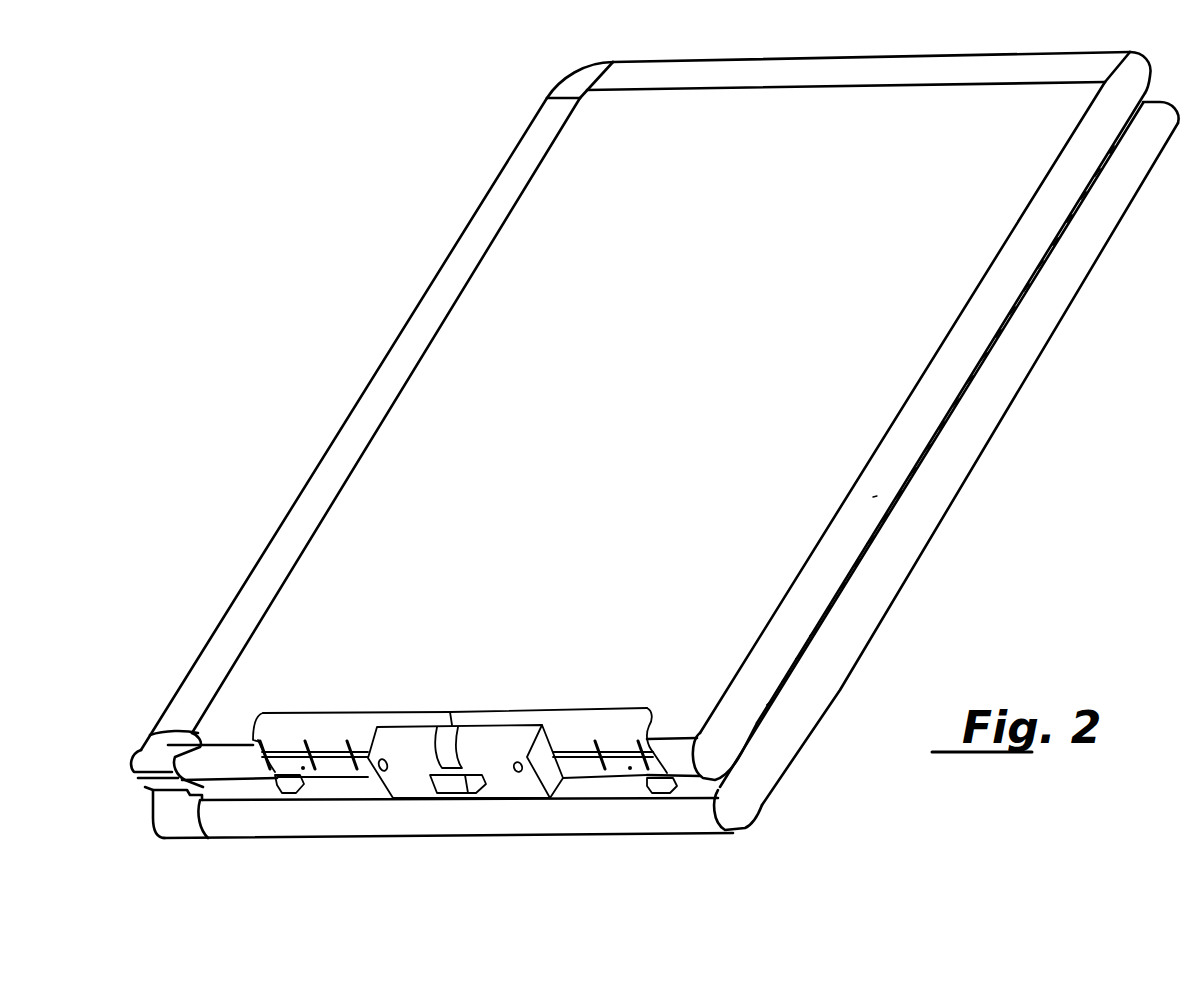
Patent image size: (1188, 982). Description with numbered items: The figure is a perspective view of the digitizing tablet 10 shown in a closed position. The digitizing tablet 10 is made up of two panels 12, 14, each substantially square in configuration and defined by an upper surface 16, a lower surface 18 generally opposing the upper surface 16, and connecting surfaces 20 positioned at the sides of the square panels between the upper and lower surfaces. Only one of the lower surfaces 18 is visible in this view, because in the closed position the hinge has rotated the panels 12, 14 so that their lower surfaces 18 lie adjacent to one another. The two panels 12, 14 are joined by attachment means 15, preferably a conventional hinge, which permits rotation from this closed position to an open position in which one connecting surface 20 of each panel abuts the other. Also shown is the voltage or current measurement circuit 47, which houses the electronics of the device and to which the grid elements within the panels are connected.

The digitizing tablet 10 is at (331, 314).
The panel 12 is at (526, 110).
The panel 14 is at (896, 616).
The attachment means 15 is at (988, 362).
The upper surface 16 is at (682, 398).
The lower surface 18 is at (618, 790).
The connecting surface 20 is at (875, 497).
The voltage or current measurement circuit 47 is at (413, 778).